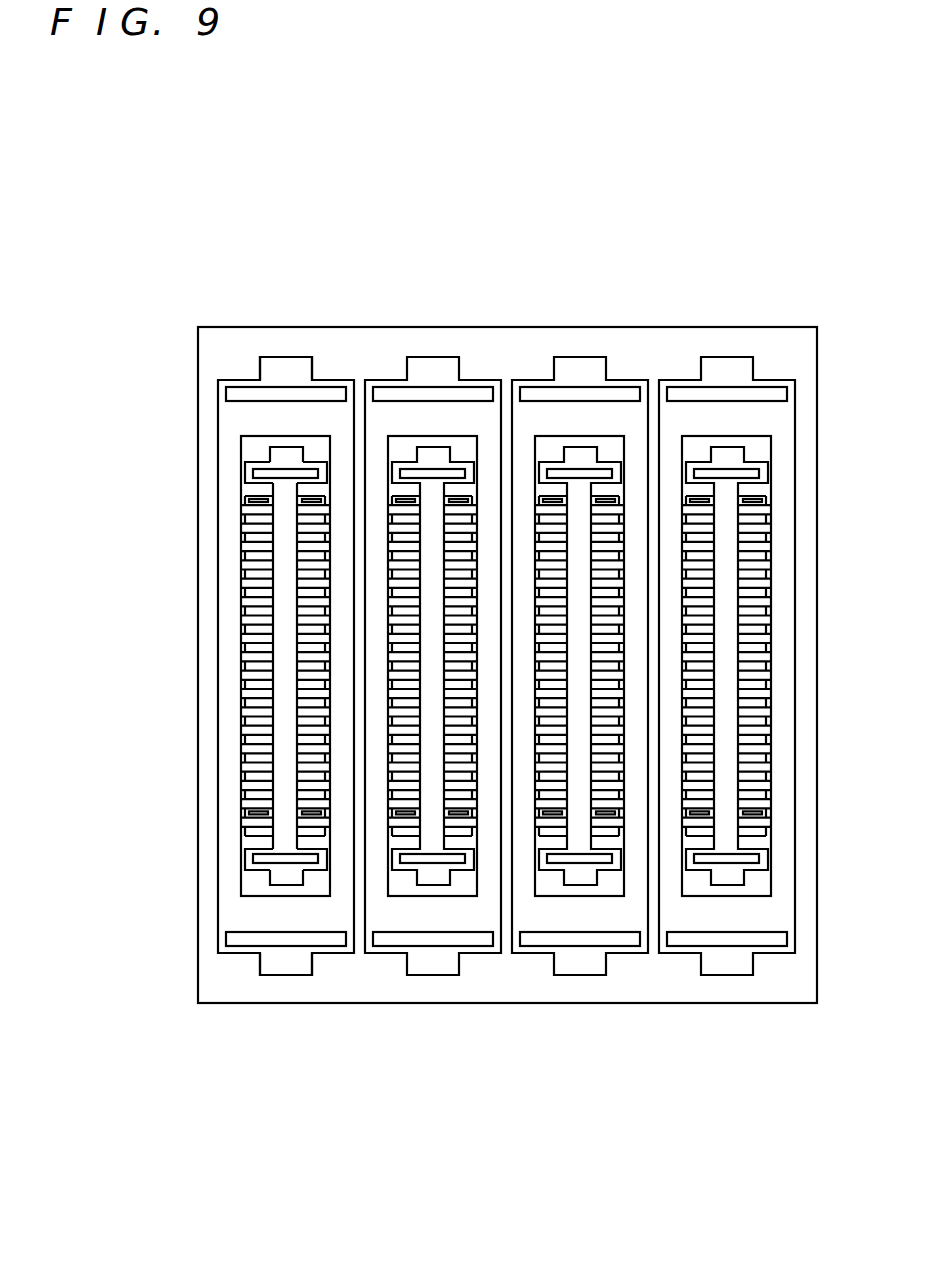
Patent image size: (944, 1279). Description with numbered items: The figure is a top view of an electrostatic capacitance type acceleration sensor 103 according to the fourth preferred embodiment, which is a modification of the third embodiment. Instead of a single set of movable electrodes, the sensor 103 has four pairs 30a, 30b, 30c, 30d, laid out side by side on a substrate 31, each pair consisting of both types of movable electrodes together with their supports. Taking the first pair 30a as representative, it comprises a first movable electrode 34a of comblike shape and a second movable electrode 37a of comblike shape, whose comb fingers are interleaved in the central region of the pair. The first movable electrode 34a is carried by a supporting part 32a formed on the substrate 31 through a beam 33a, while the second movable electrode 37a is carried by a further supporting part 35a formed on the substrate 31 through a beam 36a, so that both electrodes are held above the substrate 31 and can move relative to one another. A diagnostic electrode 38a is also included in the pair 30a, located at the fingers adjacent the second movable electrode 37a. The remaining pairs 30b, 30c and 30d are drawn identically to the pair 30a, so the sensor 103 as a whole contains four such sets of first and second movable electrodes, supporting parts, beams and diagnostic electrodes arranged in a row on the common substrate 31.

The electrostatic capacitance type acceleration sensor 103 is at (572, 248).
The substrate 31 is at (228, 352).
The pair 30a is at (240, 690).
The pair 30b is at (432, 740).
The pair 30c is at (579, 740).
The pair 30d is at (726, 740).
The supporting part 32a is at (287, 370).
The beam 33a is at (243, 382).
The first movable electrode 34a is at (228, 668).
The supporting part 35a is at (287, 456).
The beam 36a is at (255, 477).
The second movable electrode 37a is at (285, 776).
The diagnostic electrode 38a is at (316, 503).